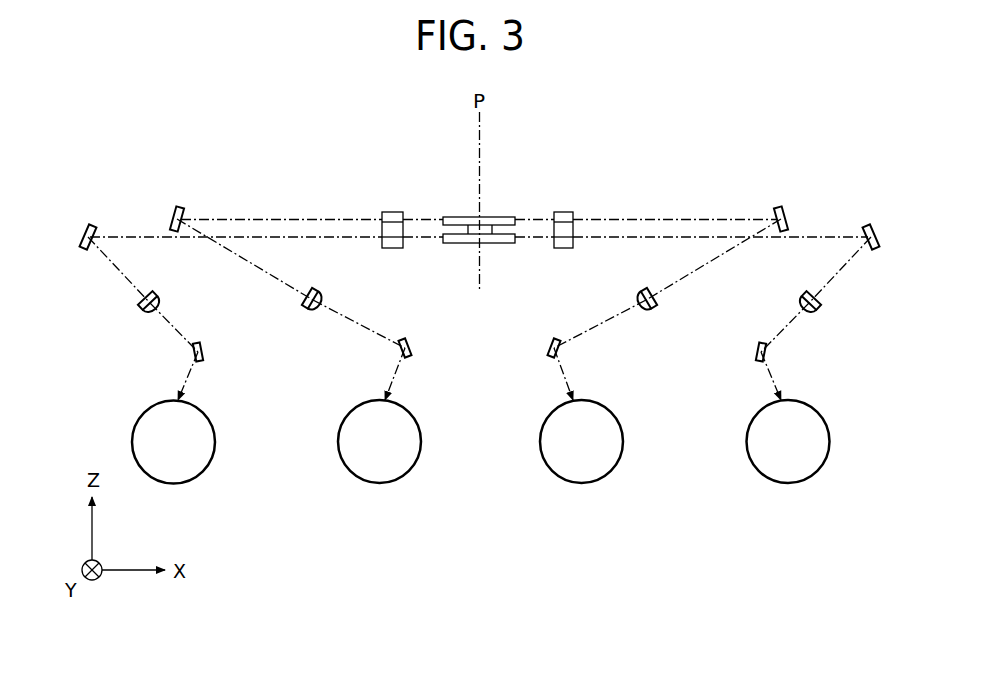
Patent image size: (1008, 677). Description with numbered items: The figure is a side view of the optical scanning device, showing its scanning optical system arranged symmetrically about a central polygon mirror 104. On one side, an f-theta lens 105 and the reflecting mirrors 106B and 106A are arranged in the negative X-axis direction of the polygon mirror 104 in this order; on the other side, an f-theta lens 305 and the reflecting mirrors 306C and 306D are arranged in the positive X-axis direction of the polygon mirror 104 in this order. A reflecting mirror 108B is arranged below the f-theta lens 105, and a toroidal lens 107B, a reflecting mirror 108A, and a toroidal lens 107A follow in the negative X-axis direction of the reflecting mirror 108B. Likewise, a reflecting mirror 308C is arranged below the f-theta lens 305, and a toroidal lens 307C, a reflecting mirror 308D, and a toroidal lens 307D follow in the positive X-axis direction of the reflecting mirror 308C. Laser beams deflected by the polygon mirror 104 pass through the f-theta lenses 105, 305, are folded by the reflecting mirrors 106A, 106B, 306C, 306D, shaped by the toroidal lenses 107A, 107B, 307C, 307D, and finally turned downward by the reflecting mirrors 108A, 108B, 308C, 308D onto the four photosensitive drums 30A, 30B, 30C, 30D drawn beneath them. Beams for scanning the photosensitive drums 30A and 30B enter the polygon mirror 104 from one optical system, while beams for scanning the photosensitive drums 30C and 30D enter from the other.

The polygon mirror 104 is at (465, 216).
The f-theta lens 105 is at (394, 211).
The f-theta lens 305 is at (567, 211).
The reflecting mirror 106A is at (93, 228).
The reflecting mirror 106B is at (181, 211).
The reflecting mirror 306C is at (777, 211).
The reflecting mirror 306D is at (867, 229).
The toroidal lens 107A is at (185, 285).
The toroidal lens 107B is at (345, 279).
The toroidal lens 307C is at (637, 292).
The toroidal lens 307D is at (798, 297).
The reflecting mirror 108A is at (225, 339).
The reflecting mirror 108B is at (432, 336).
The reflecting mirror 308C is at (546, 347).
The reflecting mirror 308D is at (754, 350).
The photosensitive drum 30A is at (206, 456).
The photosensitive drum 30B is at (412, 456).
The photosensitive drum 30C is at (614, 456).
The photosensitive drum 30D is at (820, 456).